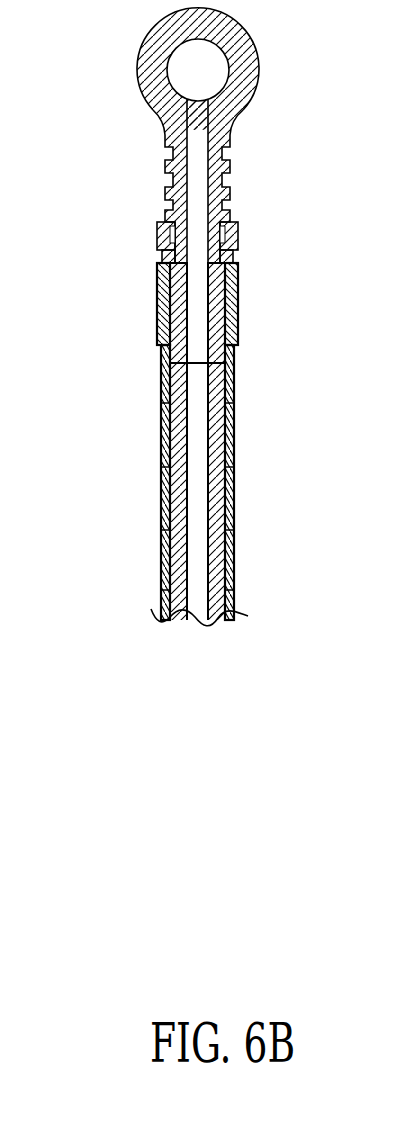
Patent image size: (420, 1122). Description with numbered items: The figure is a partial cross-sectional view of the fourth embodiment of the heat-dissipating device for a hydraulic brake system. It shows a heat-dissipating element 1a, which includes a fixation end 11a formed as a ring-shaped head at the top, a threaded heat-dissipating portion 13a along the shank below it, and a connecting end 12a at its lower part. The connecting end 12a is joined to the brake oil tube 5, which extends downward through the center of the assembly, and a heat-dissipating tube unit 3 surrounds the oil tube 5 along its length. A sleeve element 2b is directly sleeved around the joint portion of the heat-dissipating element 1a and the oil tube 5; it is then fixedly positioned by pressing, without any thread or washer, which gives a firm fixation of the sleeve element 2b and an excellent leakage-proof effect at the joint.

The heat-dissipating element 1a is at (194, 135).
The fixation end 11a is at (153, 65).
The heat-dissipating portion 13a is at (230, 158).
The sleeve element 2b is at (163, 282).
The connecting end 12a is at (213, 312).
The brake oil tube 5 is at (218, 428).
The heat-dissipating tube unit 3 is at (165, 497).